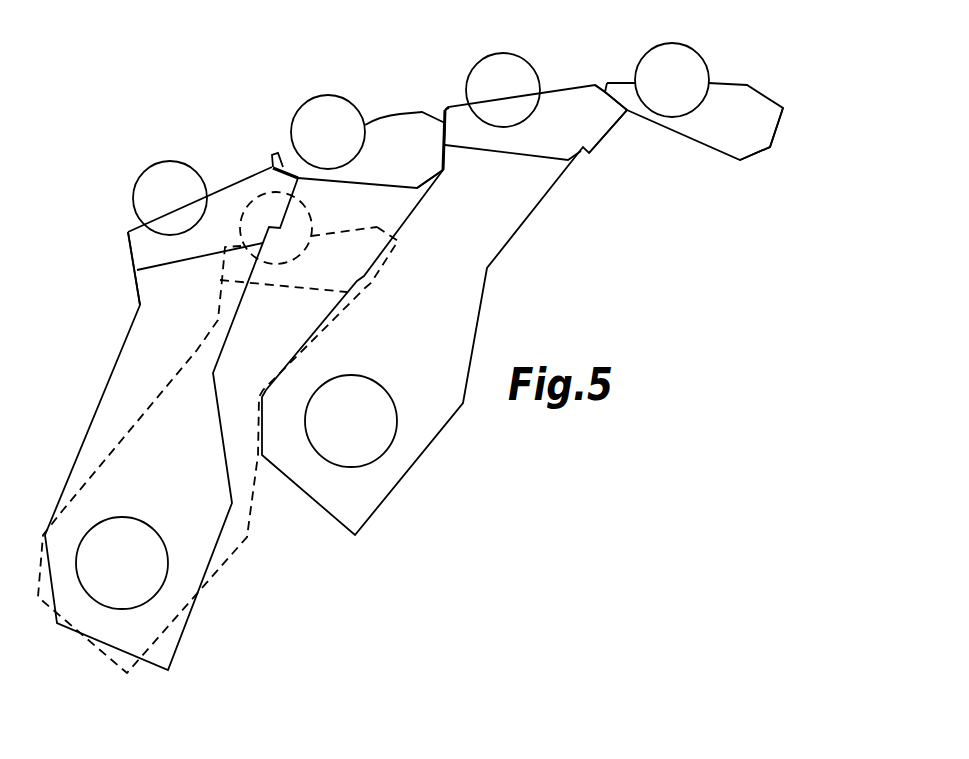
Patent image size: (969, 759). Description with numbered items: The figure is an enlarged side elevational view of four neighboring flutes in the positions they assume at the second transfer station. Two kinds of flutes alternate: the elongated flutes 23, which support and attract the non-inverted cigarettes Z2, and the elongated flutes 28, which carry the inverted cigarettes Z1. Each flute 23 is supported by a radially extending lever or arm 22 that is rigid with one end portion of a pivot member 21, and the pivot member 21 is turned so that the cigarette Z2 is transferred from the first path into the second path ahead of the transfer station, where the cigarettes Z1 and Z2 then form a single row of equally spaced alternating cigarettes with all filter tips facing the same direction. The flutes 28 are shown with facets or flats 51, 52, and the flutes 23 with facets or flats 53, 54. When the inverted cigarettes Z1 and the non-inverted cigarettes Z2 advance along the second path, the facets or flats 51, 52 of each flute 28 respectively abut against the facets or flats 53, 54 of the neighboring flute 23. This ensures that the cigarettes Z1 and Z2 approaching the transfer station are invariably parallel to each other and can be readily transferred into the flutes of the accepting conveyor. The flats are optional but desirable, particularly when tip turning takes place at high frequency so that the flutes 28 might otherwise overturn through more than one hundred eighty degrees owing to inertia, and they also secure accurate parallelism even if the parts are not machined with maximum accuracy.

The pivot member 21 is at (112, 600).
The lever or arm 22 is at (130, 362).
The flute 23 is at (145, 252).
The flute 28 is at (397, 128).
The facet or flat 51 is at (264, 179).
The facet or flat 52 is at (455, 167).
The facet or flat 53 is at (283, 158).
The facet or flat 54 is at (112, 240).
The cigarette Z1 is at (697, 34).
The cigarette Z2 is at (528, 44).